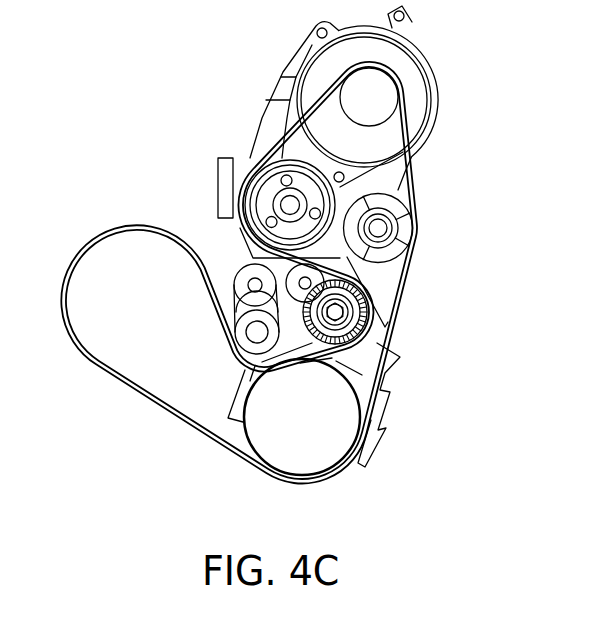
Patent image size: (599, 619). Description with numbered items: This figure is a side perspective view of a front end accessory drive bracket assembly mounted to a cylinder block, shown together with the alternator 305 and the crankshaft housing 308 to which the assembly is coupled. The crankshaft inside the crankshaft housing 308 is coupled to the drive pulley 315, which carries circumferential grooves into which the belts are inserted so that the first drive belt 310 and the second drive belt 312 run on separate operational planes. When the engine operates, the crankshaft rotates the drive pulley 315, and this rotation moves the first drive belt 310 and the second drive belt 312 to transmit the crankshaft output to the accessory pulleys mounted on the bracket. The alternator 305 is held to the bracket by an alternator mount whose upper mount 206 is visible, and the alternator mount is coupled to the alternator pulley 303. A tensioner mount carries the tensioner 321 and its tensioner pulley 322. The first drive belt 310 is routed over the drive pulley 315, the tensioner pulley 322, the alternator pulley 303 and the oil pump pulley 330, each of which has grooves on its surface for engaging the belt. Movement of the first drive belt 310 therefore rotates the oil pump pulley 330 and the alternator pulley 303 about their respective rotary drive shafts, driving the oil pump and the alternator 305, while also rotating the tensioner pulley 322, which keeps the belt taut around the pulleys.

The upper mount 206 is at (270, 113).
The alternator pulley 303 is at (375, 101).
The alternator 305 is at (410, 73).
The crankshaft housing 308 is at (375, 410).
The first drive belt 310 is at (402, 295).
The second drive belt 312 is at (118, 380).
The drive pulley 315 is at (315, 462).
The tensioner 321 is at (398, 197).
The tensioner pulley 322 is at (402, 221).
The oil pump pulley 330 is at (265, 198).